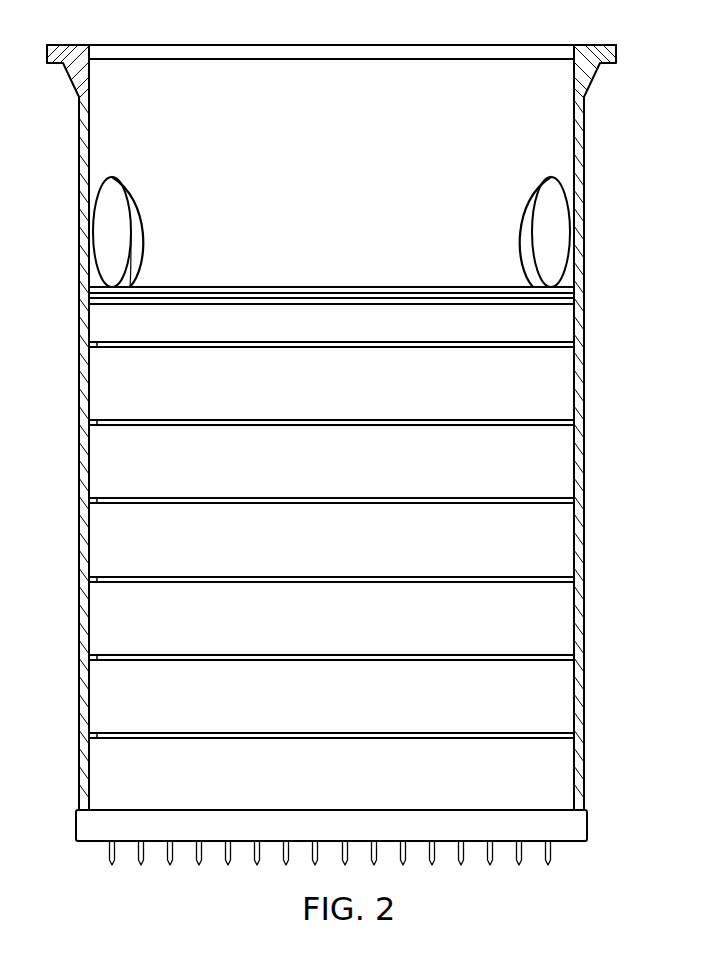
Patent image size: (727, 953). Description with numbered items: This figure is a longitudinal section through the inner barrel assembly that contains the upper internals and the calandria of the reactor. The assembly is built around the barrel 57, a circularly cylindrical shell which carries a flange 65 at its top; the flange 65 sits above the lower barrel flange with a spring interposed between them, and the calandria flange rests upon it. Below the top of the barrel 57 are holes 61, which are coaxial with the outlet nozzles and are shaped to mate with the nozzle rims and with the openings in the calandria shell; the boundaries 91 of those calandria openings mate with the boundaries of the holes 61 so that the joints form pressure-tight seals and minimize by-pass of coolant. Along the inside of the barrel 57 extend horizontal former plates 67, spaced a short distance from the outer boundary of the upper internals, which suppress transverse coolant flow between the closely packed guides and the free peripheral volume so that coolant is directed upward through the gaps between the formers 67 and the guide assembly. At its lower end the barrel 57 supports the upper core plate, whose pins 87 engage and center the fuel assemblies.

The barrel 57 is at (632, 538).
The flange 65 is at (77, 45).
The holes 61 is at (108, 197).
The boundaries 91 is at (134, 232).
The former plates 67 is at (560, 420).
The pins 87 is at (226, 856).